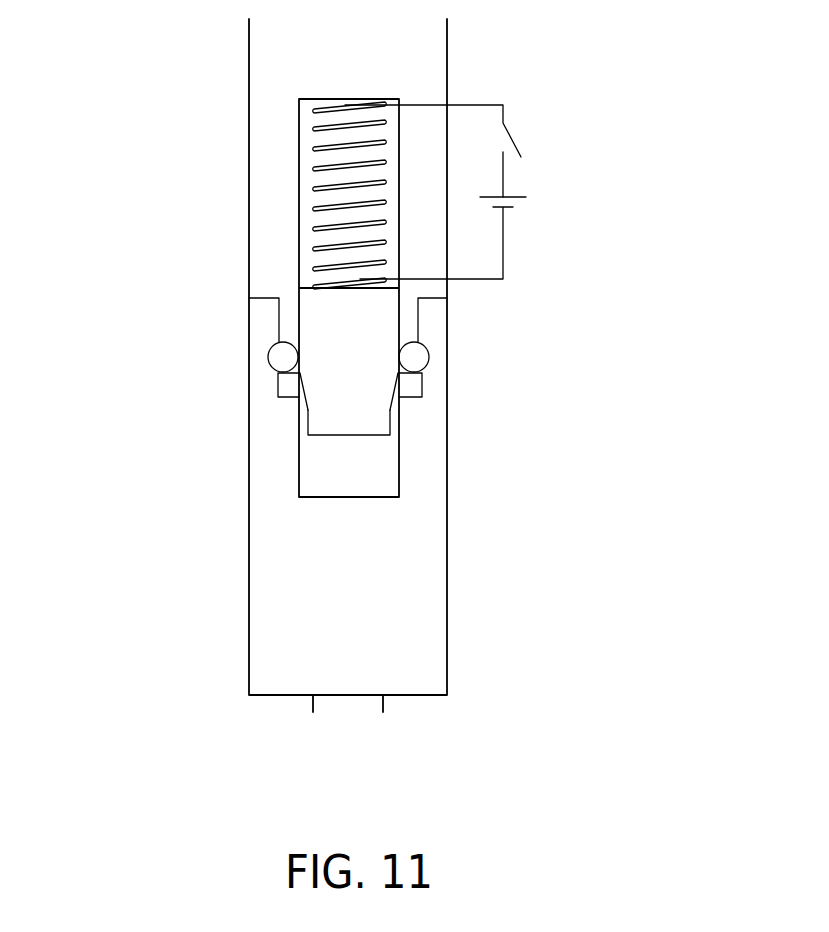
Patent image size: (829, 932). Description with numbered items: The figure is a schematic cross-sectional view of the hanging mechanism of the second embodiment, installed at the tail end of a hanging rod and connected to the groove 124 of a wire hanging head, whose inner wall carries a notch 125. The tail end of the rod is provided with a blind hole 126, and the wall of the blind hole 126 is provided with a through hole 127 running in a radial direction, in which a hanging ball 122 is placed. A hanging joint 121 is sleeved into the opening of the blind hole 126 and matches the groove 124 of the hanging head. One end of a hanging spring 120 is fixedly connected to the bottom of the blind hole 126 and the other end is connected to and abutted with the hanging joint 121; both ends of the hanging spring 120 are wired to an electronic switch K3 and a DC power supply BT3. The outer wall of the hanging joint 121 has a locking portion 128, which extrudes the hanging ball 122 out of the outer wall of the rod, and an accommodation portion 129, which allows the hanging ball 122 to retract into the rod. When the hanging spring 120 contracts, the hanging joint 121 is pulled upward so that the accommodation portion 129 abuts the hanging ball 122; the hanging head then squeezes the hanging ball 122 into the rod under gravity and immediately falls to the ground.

The hanging spring 120 is at (340, 237).
The blind hole 126 is at (305, 256).
The through hole 127 is at (277, 338).
The notch 125 is at (268, 354).
The hanging ball 122 is at (413, 357).
The locking portion 128 is at (299, 380).
The accommodation portion 129 is at (303, 410).
The hanging joint 121 is at (360, 412).
The groove 124 is at (325, 467).
The electronic switch K3 is at (454, 151).
The DC power supply BT3 is at (470, 230).